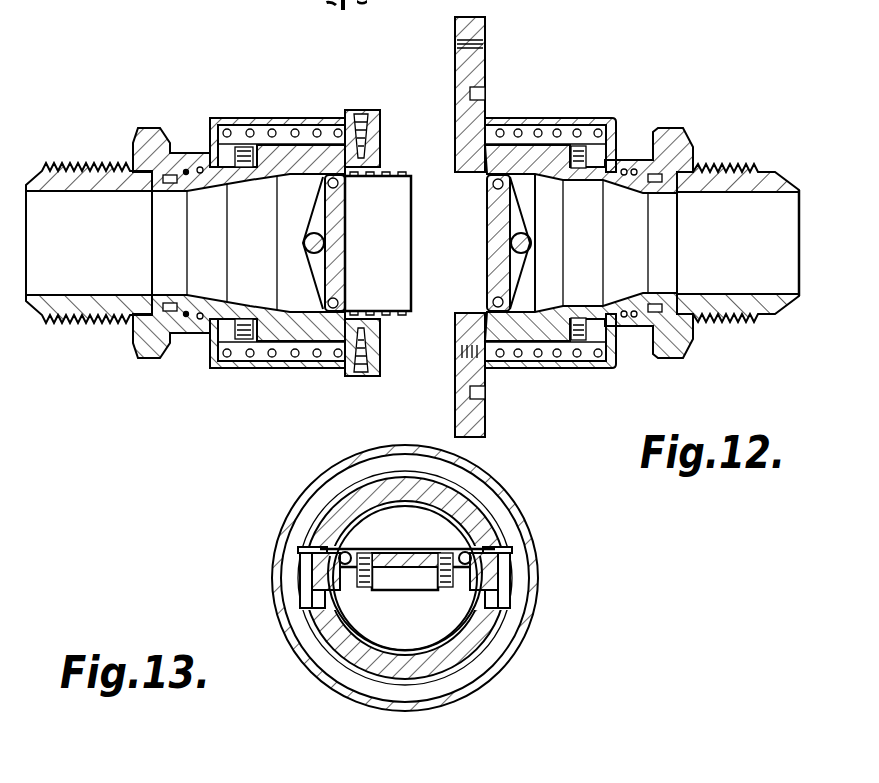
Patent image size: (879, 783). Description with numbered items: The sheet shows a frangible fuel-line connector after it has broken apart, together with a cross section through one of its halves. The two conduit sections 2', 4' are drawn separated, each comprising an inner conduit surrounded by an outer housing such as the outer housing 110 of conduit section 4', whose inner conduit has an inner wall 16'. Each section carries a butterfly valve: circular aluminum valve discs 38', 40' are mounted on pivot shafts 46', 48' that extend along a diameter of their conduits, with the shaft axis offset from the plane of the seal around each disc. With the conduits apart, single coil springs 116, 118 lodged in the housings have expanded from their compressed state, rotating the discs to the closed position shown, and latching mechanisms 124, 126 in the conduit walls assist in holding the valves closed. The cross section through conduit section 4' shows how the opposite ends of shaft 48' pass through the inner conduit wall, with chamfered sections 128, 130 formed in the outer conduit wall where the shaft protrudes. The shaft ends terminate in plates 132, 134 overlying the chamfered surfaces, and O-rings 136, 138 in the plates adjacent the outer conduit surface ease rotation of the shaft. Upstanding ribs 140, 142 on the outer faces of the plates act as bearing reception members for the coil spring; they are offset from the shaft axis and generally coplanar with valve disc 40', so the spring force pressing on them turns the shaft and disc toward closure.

In FIG. 12, the conduit section 4' is at (255, 217).
In FIG. 13, the conduit section 4' is at (437, 568).
In FIG. 12, the conduit section 2' is at (590, 205).
In FIG. 12, the latching mechanism 126 is at (198, 150).
In FIG. 12, the coil spring 118 is at (248, 120).
In FIG. 12, the coil spring 116 is at (550, 118).
In FIG. 12, the latching mechanism 124 is at (588, 155).
In FIG. 12, the valve disc 40' is at (399, 243).
In FIG. 13, the valve disc 40' is at (420, 514).
In FIG. 12, the valve disc 38' is at (452, 227).
In FIG. 12, the pivot shaft 48' is at (163, 243).
In FIG. 13, the pivot shaft 48' is at (435, 580).
In FIG. 12, the pivot shaft 46' is at (664, 243).
In FIG. 13, the outer housing 110 is at (482, 683).
In FIG. 13, the inner wall 16' is at (387, 614).
In FIG. 13, the chamfered section 128 is at (510, 552).
In FIG. 13, the chamfered section 130 is at (298, 545).
In FIG. 13, the plate 132 is at (508, 600).
In FIG. 13, the plate 134 is at (297, 598).
In FIG. 13, the O-ring 136 is at (510, 550).
In FIG. 13, the O-ring 138 is at (303, 545).
In FIG. 13, the upstanding rib 140 is at (512, 578).
In FIG. 13, the upstanding rib 142 is at (298, 553).